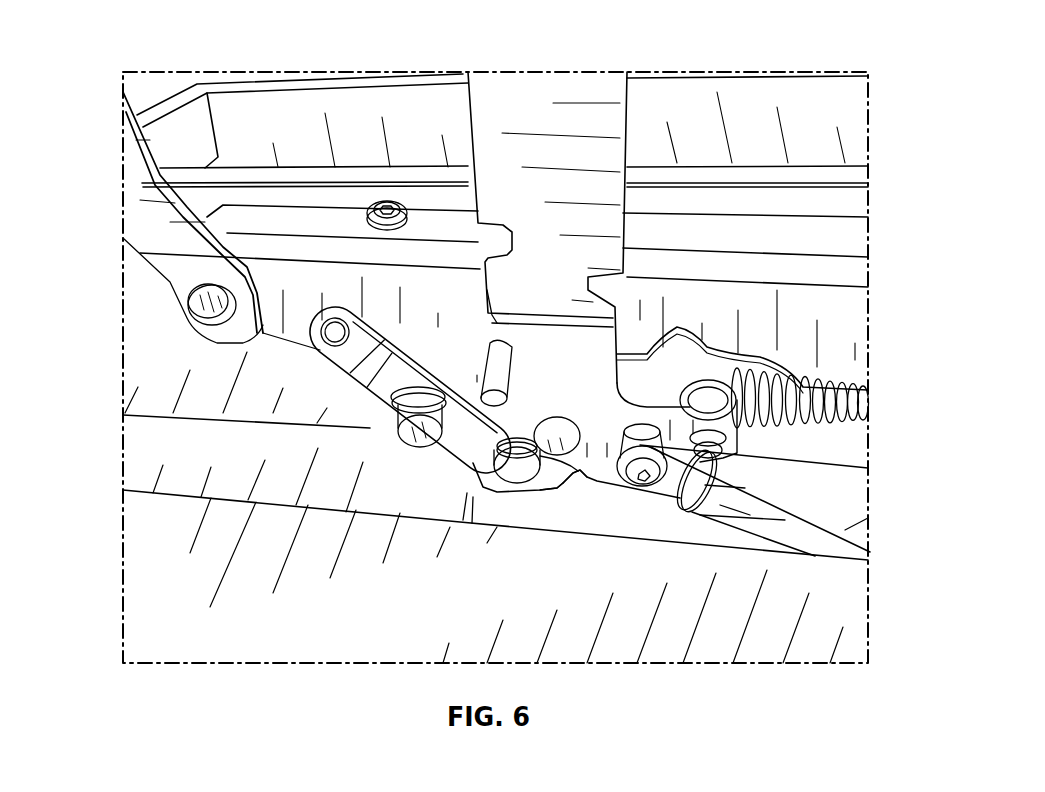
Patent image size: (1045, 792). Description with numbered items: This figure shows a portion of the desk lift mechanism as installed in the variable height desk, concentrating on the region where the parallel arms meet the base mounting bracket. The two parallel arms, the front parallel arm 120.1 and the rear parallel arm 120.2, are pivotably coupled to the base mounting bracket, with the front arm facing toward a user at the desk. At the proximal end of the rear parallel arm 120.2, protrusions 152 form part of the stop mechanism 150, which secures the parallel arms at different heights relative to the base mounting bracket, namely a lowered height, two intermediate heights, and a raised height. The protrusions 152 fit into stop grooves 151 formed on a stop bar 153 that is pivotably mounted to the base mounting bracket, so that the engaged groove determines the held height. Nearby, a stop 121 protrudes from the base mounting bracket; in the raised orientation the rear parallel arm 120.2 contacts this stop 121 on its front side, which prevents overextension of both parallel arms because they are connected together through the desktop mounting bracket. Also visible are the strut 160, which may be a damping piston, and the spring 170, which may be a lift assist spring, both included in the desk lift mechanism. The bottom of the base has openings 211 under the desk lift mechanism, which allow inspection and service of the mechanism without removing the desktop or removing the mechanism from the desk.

The front parallel arm 120.1 is at (137, 193).
The rear parallel arm 120.2 is at (548, 100).
The stop 121 is at (497, 352).
The stop mechanism 150 is at (370, 428).
The stop grooves 151 is at (578, 458).
The protrusions 152 is at (414, 434).
The stop bar 153 is at (372, 398).
The strut 160 is at (845, 517).
The spring 170 is at (866, 405).
The openings 211 is at (581, 486).